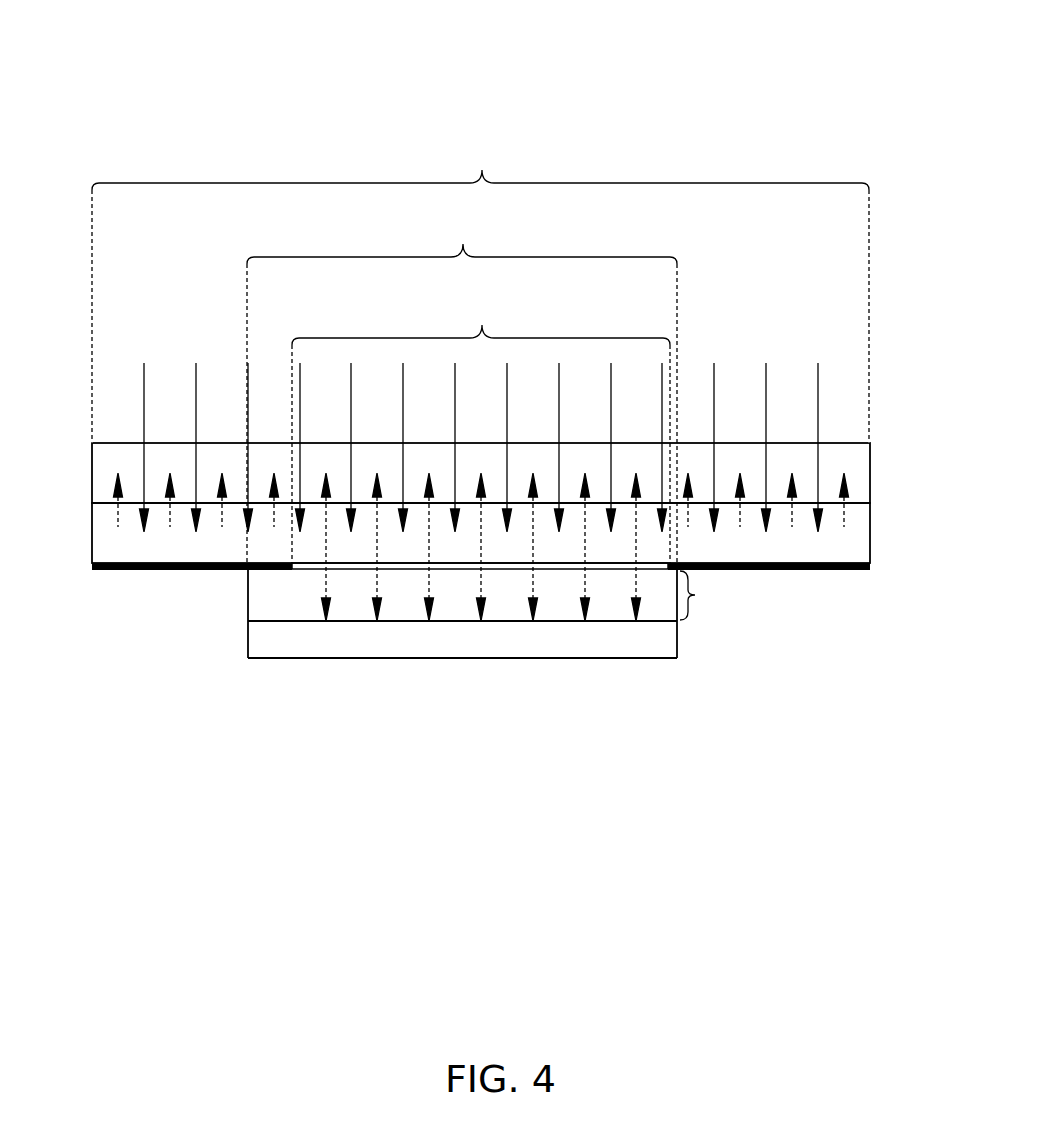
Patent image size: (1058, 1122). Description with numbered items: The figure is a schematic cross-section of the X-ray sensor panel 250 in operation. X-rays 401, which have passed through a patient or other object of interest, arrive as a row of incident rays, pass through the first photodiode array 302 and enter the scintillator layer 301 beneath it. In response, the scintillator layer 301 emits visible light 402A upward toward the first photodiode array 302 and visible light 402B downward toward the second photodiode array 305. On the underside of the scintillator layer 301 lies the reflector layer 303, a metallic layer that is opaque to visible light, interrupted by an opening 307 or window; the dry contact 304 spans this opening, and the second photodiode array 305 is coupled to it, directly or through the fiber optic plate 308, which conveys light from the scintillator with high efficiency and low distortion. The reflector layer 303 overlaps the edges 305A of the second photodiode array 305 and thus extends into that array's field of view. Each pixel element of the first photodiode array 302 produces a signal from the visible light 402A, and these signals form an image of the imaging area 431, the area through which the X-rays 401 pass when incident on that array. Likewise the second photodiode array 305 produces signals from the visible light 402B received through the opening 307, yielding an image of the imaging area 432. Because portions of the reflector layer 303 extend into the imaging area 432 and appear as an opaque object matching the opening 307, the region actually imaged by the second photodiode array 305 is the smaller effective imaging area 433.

The X-ray sensor panel 250 is at (118, 48).
The scintillator layer 301 is at (872, 548).
The first photodiode array 302 is at (872, 468).
The reflector layer 303 is at (165, 570).
The dry contact 304 is at (310, 570).
The second photodiode array 305 is at (483, 653).
The edges of second photodiode array 305A is at (248, 640).
The opening 307 is at (403, 582).
The fiber optic plate 308 is at (697, 595).
The X-rays 401 is at (145, 400).
The visible light 402A is at (115, 492).
The visible light 402B is at (325, 610).
The imaging area 431 is at (482, 170).
The imaging area 432 is at (463, 244).
The effective imaging area 433 is at (482, 325).